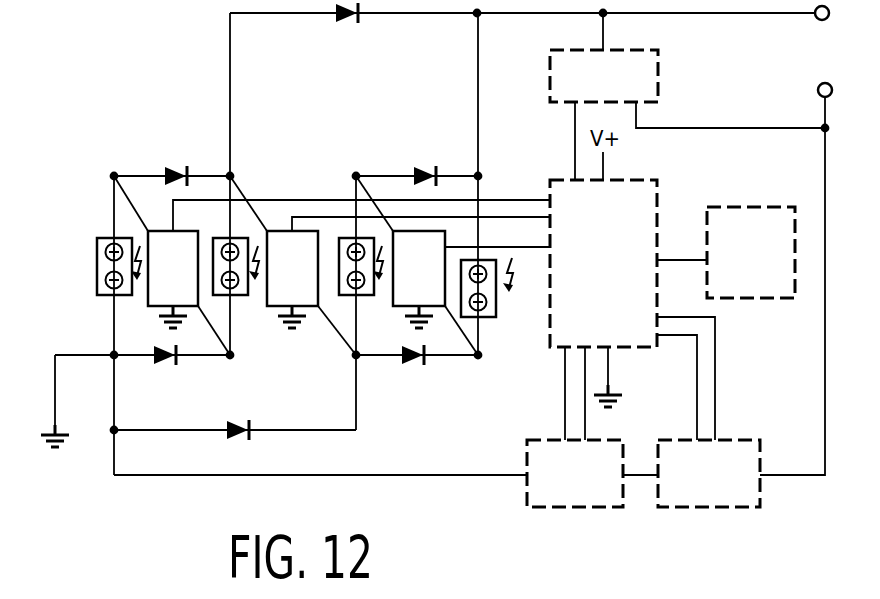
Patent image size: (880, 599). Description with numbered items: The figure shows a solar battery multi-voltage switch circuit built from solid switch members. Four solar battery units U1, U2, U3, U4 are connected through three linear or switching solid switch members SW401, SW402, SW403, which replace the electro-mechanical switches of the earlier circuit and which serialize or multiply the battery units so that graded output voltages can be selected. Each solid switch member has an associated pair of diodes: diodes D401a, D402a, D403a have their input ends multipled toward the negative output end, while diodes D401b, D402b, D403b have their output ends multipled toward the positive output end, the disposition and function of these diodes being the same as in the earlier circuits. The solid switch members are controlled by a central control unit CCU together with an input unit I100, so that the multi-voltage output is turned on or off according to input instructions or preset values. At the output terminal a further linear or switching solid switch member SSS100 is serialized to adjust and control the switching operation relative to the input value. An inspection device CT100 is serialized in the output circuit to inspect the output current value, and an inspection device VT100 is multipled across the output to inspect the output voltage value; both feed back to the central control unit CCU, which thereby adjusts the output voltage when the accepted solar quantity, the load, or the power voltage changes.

The diode D401a is at (345, 33).
The diode D401b is at (245, 448).
The diode D402a is at (181, 157).
The diode D402b is at (170, 374).
The diode D403a is at (431, 156).
The diode D403b is at (411, 374).
The battery unit U1 is at (104, 284).
The battery unit U2 is at (238, 284).
The battery unit U3 is at (362, 284).
The battery unit U4 is at (497, 291).
The solid switch member SW401 is at (292, 279).
The solid switch member SW402 is at (173, 279).
The solid switch member SW403 is at (419, 279).
The inspection device VT100 is at (604, 76).
The central control unit CCU is at (603, 263).
The input unit I100 is at (751, 252).
The inspection device CT100 is at (575, 473).
The solid switch member SSS100 is at (709, 473).